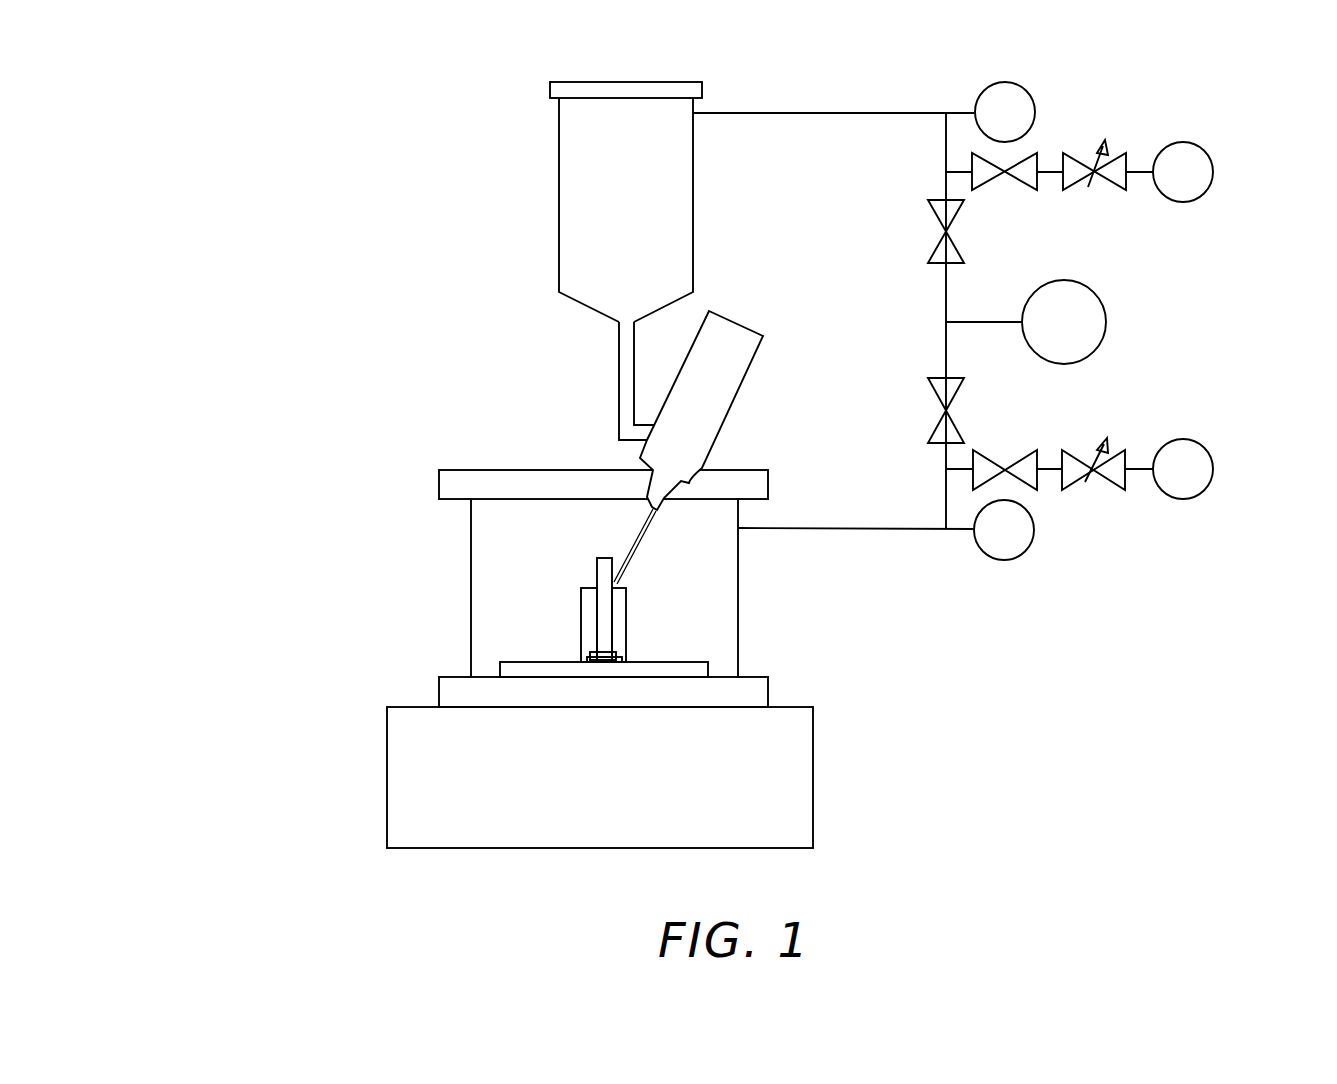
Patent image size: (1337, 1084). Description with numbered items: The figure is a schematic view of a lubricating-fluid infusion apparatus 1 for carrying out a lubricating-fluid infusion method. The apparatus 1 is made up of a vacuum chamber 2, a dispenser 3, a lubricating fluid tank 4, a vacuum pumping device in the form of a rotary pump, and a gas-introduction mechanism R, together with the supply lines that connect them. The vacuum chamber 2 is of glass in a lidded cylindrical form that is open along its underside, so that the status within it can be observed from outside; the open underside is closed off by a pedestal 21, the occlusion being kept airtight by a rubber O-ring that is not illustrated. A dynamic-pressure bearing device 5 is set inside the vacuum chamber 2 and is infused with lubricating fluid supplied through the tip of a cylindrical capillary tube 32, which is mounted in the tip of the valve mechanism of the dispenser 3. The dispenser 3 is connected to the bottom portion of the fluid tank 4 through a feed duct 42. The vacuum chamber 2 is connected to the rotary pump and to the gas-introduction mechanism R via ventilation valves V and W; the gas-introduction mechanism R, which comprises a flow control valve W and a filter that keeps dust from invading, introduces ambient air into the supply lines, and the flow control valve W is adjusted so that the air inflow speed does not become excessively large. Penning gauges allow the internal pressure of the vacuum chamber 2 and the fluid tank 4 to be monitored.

The lubricating-fluid infusion apparatus 1 is at (360, 465).
The vacuum chamber 2 is at (435, 536).
The pedestal 21 is at (403, 735).
The dispenser 3 is at (758, 403).
The capillary tube 32 is at (643, 547).
The lubricating fluid tank 4 is at (590, 218).
The feed duct 42 is at (625, 367).
The dynamic-pressure bearing device 5 is at (638, 618).
The ventilation valve V is at (965, 225).
The flow control valve W is at (1102, 115).
The gas-introduction mechanism R is at (1243, 55).